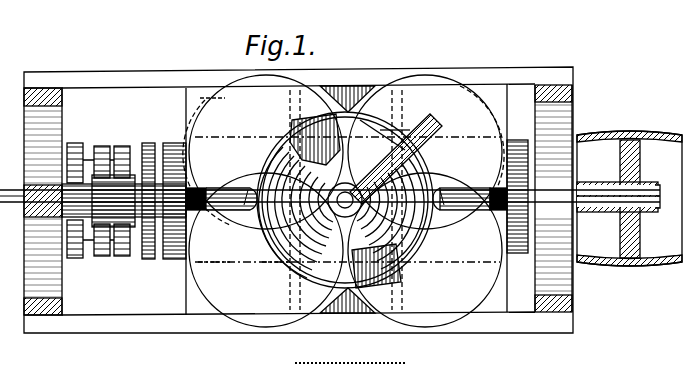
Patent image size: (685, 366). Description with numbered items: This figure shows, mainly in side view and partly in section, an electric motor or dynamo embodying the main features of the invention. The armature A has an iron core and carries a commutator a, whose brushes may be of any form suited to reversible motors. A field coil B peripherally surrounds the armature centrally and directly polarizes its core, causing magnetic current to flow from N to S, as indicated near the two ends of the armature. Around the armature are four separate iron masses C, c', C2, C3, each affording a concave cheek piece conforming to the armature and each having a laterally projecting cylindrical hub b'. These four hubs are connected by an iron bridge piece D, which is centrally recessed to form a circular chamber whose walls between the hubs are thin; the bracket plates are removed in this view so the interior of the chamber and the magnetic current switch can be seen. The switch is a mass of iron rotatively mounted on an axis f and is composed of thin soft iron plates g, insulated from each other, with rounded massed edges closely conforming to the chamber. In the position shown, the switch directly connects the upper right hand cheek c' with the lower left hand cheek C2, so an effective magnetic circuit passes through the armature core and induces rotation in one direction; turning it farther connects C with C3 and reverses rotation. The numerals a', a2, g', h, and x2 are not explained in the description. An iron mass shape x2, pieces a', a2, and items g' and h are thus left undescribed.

The armature A is at (176, 152).
The commutator a is at (330, 200).
The ports a' is at (345, 198).
The port a2 is at (276, 275).
The field coil B is at (355, 86).
The cylindrical hub b' is at (340, 171).
The iron mass C is at (425, 250).
The iron mass c' is at (426, 152).
The iron mass C2 is at (266, 250).
The iron mass C3 is at (263, 152).
The bridge piece D is at (347, 200).
The axis f is at (345, 200).
The soft iron plate g is at (380, 135).
The piston guide g' is at (391, 131).
The rotor h is at (341, 201).
The north pole N is at (581, 191).
The south pole S is at (214, 271).
The piston x2 is at (396, 159).